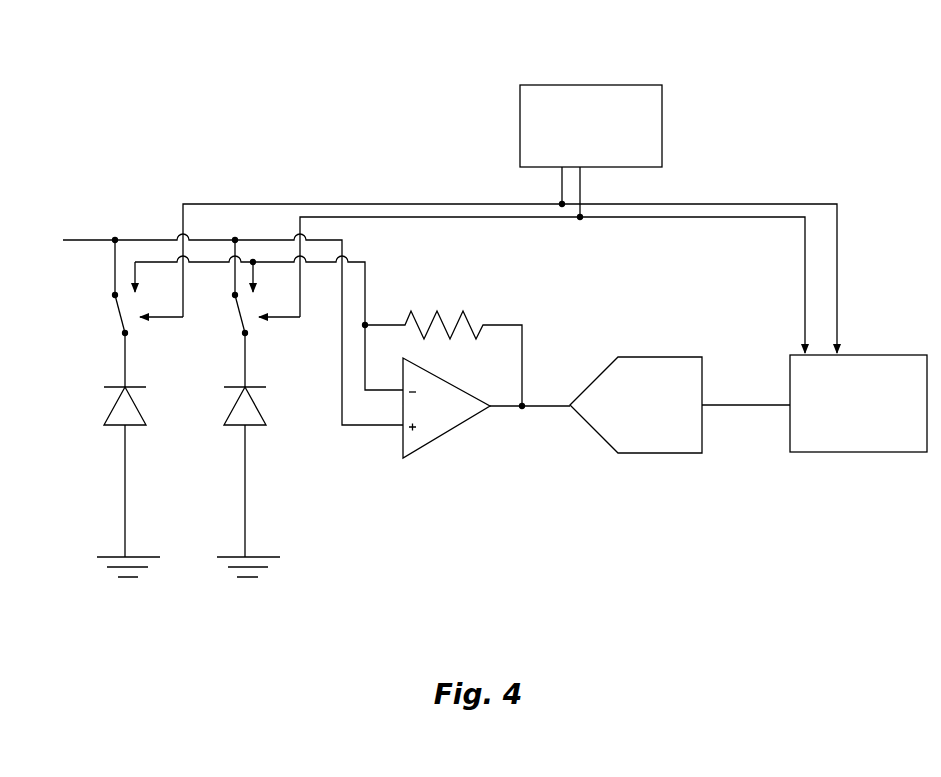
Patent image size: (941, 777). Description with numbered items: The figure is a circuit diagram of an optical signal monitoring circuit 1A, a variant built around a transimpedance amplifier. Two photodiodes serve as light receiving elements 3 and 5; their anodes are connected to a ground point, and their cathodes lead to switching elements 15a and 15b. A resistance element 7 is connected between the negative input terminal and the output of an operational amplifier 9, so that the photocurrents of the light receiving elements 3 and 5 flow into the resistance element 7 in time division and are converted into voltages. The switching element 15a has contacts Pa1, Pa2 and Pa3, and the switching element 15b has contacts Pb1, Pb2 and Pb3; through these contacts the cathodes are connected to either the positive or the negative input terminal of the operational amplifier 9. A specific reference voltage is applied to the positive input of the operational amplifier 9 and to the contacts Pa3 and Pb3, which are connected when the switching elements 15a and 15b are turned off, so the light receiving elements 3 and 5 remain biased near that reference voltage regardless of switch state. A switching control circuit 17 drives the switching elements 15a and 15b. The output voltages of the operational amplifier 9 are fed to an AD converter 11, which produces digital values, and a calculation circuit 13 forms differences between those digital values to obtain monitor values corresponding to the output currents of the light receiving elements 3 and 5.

The optical signal monitoring circuit 1A is at (828, 70).
The light receiving element 3 is at (143, 408).
The light receiving element 5 is at (263, 408).
The resistance element 7 is at (452, 310).
The operational amplifier 9 is at (430, 449).
The AD converter 11 is at (653, 455).
The calculation circuit 13 is at (862, 455).
The switching element 15a is at (108, 313).
The switching element 15b is at (234, 313).
The switching control circuit 17 is at (596, 82).
The contact Pa1 is at (121, 336).
The contact Pa2 is at (138, 294).
The contact Pa3 is at (112, 295).
The contact Pb1 is at (240, 336).
The contact Pb2 is at (256, 294).
The contact Pb3 is at (232, 296).